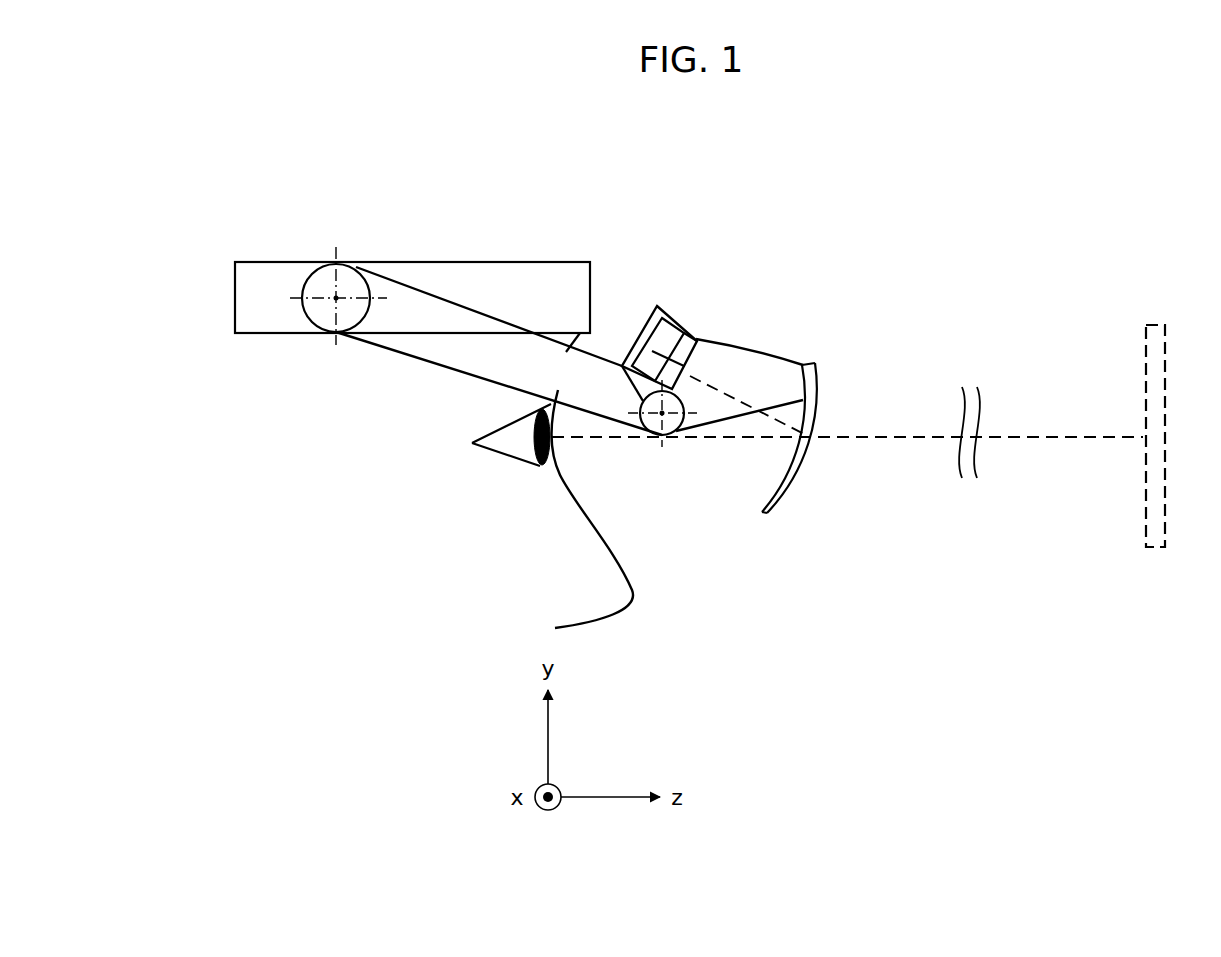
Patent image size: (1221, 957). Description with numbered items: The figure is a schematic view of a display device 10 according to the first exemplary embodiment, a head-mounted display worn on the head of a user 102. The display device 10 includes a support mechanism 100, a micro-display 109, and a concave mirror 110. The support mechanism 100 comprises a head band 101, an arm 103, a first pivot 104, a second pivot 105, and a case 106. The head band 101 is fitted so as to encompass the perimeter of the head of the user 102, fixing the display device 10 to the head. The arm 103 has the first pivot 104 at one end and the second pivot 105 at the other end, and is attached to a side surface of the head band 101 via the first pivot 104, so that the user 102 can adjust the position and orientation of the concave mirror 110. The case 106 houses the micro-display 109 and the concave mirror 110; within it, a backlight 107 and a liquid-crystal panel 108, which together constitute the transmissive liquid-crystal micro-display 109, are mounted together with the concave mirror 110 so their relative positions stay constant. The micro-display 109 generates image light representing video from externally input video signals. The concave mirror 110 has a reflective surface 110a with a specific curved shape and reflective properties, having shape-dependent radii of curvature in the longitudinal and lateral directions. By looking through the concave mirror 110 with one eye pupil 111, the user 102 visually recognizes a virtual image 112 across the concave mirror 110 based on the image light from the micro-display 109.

The display device 10 is at (407, 124).
The support mechanism 100 is at (325, 250).
The head band 101 is at (488, 295).
The user 102 is at (432, 482).
The arm 103 is at (433, 350).
The first pivot 104 is at (352, 283).
The second pivot 105 is at (673, 423).
The case 106 is at (775, 352).
The backlight 107 is at (672, 320).
The liquid-crystal panel 108 is at (688, 333).
The micro-display 109 is at (662, 223).
The concave mirror 110 is at (805, 455).
The reflective surface 110a is at (766, 506).
The pupil 111 is at (551, 446).
The virtual image 112 is at (1153, 548).